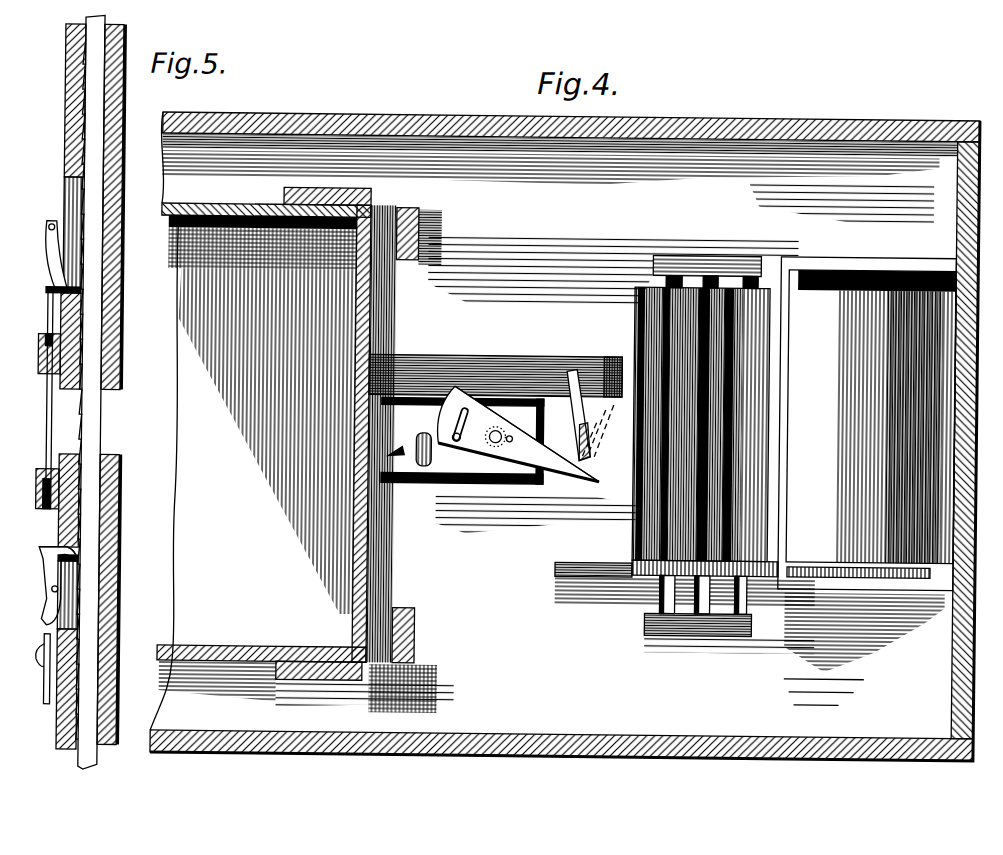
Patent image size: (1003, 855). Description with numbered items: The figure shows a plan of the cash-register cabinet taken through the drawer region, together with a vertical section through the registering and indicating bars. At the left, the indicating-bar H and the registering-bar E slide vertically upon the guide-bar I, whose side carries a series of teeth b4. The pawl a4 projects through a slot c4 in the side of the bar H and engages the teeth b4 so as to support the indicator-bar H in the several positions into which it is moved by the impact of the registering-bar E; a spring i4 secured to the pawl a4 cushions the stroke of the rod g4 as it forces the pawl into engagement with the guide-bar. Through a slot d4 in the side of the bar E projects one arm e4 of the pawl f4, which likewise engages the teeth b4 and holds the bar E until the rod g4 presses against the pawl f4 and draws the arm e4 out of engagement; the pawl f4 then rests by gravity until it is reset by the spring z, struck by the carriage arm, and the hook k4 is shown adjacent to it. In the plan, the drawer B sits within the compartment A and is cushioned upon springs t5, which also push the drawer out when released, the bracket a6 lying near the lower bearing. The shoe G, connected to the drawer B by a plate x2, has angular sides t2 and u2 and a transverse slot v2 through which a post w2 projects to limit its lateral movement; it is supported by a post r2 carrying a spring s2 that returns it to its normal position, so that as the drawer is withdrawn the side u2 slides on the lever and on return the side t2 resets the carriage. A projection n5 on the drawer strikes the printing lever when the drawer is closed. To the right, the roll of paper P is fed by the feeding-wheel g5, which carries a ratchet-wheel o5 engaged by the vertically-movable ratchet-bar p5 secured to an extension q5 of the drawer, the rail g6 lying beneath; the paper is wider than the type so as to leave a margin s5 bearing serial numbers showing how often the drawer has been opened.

In FIG. 5, the indicating-bar H is at (62, 112).
In FIG. 5, the guide-bar I is at (91, 392).
In FIG. 5, the registering-bar E is at (118, 384).
In FIG. 5, the teeth b4 is at (83, 400).
In FIG. 5, the slot c4 is at (72, 196).
In FIG. 5, the pawl a4 is at (50, 236).
In FIG. 5, the spring i4 is at (50, 290).
In FIG. 5, the rod g4 is at (52, 438).
In FIG. 5, the hook k4 is at (56, 553).
In FIG. 5, the slot d4 is at (63, 573).
In FIG. 5, the arm e4 is at (80, 560).
In FIG. 5, the pawl f4 is at (57, 590).
In FIG. 5, the spring z is at (50, 638).
In FIG. 4, the casing compartment A is at (559, 238).
In FIG. 4, the drawer B is at (264, 433).
In FIG. 4, the springs t5 is at (400, 212).
In FIG. 4, the bracket a6 is at (458, 697).
In FIG. 4, the shoe G is at (518, 434).
In FIG. 4, the angular side t2 is at (512, 432).
In FIG. 4, the angular side u2 is at (518, 462).
In FIG. 4, the transverse slot v2 is at (471, 414).
In FIG. 4, the post w2 is at (463, 437).
In FIG. 4, the post r2 is at (498, 441).
In FIG. 4, the spring s2 is at (514, 440).
In FIG. 4, the plate x2 is at (410, 435).
In FIG. 4, the projection n5 is at (592, 395).
In FIG. 4, the feeding-wheel g5 is at (640, 506).
In FIG. 4, the margin s5 is at (768, 286).
In FIG. 4, the rail g6 is at (593, 563).
In FIG. 4, the ratchet-wheel o5 is at (645, 578).
In FIG. 4, the ratchet-bar p5 is at (625, 588).
In FIG. 4, the extension q5 is at (780, 598).
In FIG. 4, the roll of paper P is at (867, 482).